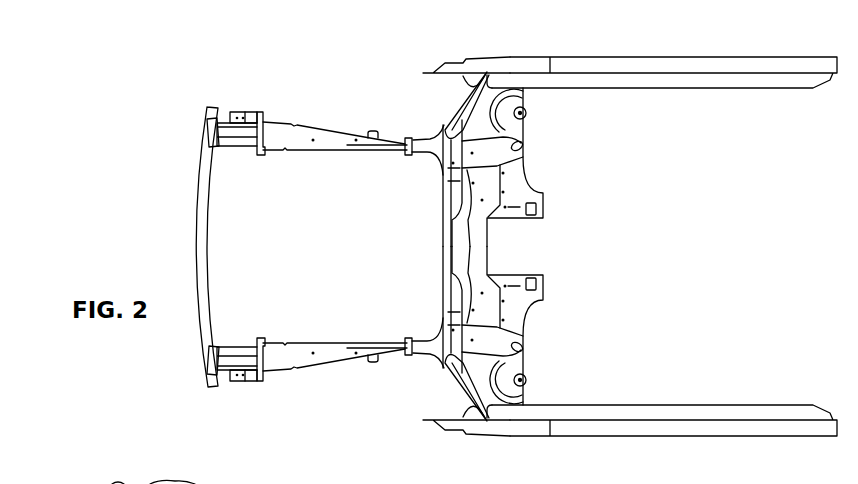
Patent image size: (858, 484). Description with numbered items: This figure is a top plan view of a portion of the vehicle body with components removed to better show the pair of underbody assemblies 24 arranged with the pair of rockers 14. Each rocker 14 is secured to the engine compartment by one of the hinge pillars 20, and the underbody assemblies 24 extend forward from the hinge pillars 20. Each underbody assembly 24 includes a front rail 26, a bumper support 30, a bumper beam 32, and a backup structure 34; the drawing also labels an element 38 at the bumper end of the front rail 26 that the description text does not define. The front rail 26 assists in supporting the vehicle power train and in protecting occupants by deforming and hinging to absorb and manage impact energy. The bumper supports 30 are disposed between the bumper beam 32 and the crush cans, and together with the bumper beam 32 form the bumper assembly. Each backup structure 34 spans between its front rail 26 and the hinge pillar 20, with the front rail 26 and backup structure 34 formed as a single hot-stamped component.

The rocker 14 is at (650, 57).
The hinge pillar 20 is at (487, 57).
The underbody assembly 24 is at (289, 121).
The front rail 26 is at (303, 150).
The bumper support 30 is at (208, 130).
The bumper beam 32 is at (197, 200).
The backup structure 34 is at (398, 137).
The flange 38 is at (230, 111).